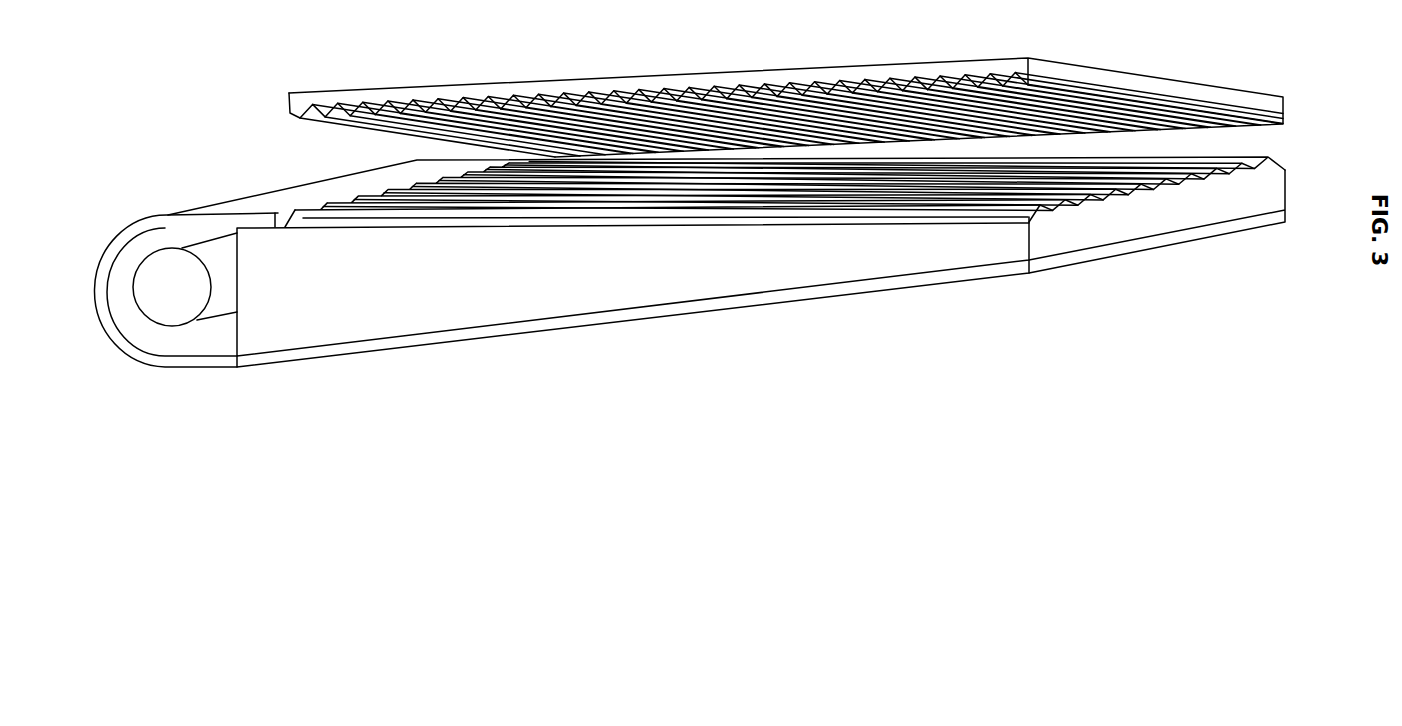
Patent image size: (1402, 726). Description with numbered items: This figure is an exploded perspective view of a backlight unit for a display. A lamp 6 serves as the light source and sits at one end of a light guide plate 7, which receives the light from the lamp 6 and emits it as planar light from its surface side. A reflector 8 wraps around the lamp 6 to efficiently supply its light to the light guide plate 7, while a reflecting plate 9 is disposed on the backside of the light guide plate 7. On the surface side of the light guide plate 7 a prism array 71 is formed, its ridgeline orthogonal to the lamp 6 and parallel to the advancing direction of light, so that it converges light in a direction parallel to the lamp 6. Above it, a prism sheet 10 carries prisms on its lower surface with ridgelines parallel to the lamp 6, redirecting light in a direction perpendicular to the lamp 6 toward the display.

The lamp 6 is at (165, 303).
The light guide plate 7 is at (1217, 205).
The prism array 71 is at (1115, 197).
The reflector 8 is at (95, 302).
The reflecting plate 9 is at (1017, 275).
The prism sheet 10 is at (1160, 80).